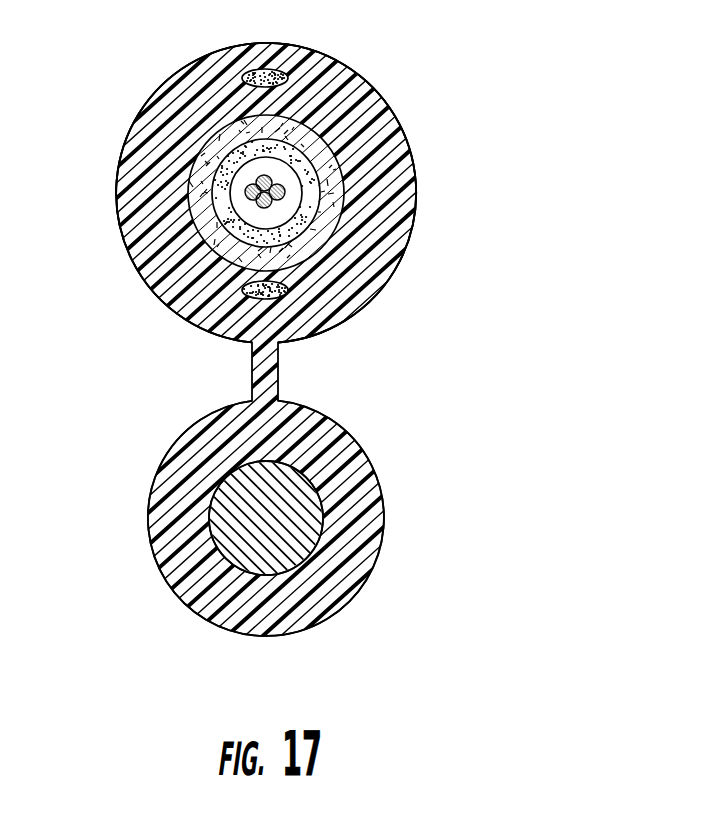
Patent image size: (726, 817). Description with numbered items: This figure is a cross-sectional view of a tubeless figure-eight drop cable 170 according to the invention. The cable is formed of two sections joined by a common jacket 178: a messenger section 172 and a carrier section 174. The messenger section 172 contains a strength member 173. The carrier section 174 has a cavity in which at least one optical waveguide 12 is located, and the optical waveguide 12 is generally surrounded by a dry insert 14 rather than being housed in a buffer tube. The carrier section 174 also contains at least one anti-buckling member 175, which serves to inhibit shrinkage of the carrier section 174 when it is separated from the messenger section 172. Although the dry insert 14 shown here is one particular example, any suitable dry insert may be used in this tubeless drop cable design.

The optical waveguide 12 is at (178, 279).
The dry insert 14 is at (320, 163).
The tubeless figure-eight drop cable 170 is at (402, 610).
The messenger section 172 is at (150, 553).
The strength member 173 is at (273, 540).
The carrier section 174 is at (361, 314).
The anti-buckling member 175 is at (288, 80).
The common jacket 178 is at (322, 495).